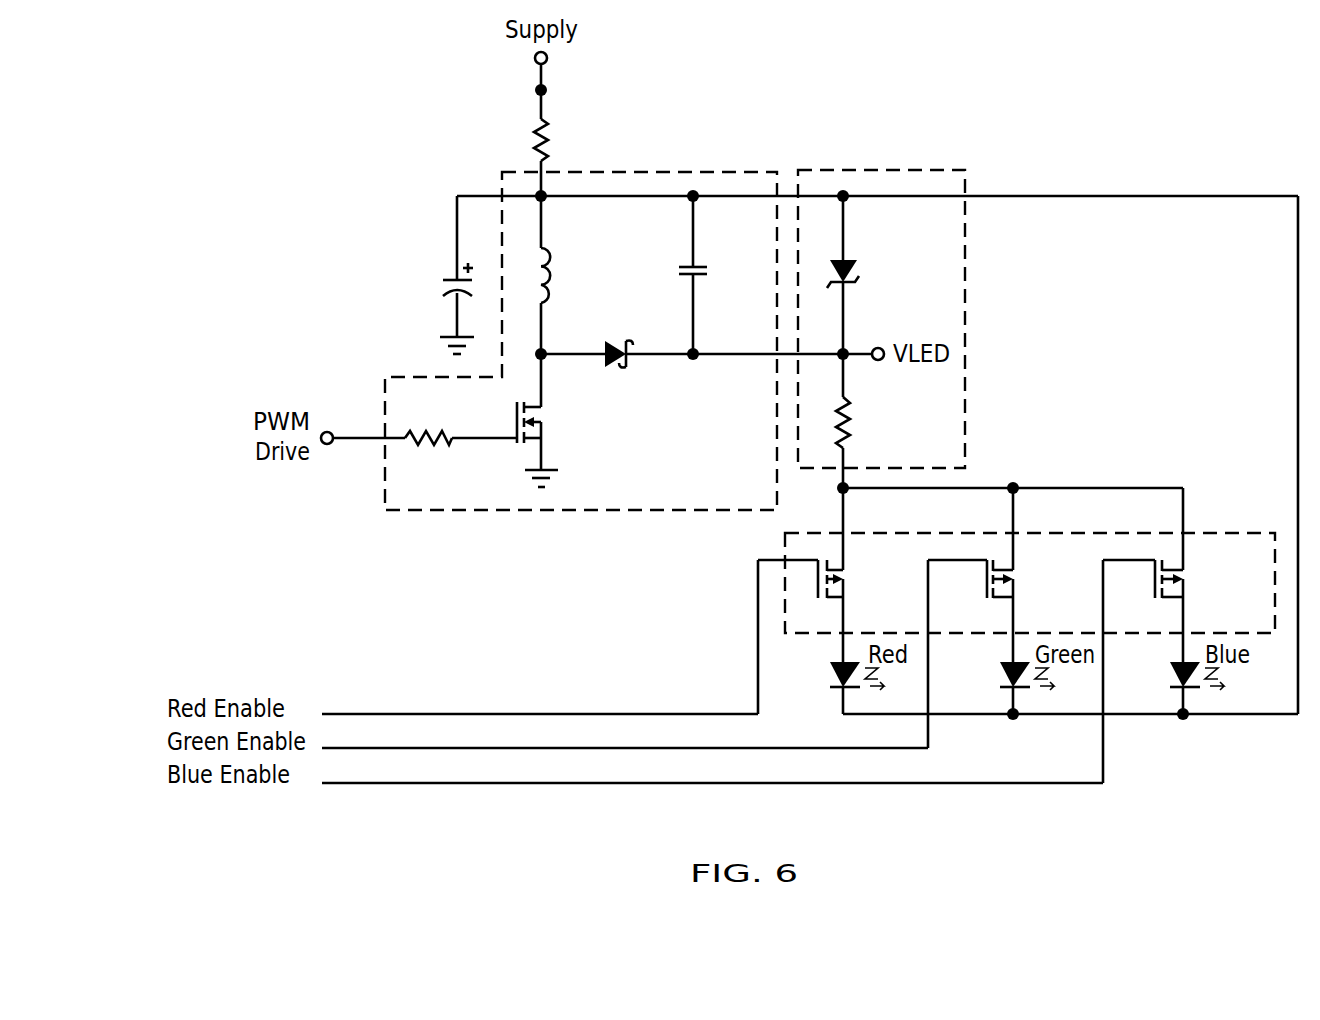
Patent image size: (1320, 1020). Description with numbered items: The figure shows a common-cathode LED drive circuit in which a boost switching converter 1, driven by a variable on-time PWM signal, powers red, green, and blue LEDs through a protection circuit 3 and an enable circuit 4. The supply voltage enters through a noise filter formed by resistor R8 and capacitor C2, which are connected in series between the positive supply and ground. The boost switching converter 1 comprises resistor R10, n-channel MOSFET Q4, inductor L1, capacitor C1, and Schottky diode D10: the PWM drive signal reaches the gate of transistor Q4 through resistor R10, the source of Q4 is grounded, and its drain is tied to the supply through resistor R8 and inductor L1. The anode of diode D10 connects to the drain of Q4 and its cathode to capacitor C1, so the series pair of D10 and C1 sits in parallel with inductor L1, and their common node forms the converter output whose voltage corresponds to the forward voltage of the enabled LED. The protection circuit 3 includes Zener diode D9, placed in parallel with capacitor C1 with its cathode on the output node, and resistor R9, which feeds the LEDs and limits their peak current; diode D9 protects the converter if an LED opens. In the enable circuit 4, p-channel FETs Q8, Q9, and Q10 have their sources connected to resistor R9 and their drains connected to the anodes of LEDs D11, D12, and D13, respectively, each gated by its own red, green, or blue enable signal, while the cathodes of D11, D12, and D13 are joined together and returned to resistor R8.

The switching converter 1 is at (662, 170).
The protection circuit 3 is at (883, 169).
The enable circuit 4 is at (1205, 532).
The resistor R8 is at (548, 145).
The capacitor C2 is at (445, 280).
The inductor L1 is at (552, 260).
The capacitor C1 is at (705, 268).
The Schottky diode D10 is at (618, 364).
The n-channel MOSFET Q4 is at (543, 427).
The resistor R10 is at (428, 445).
The Zener diode D9 is at (857, 272).
The resistor R9 is at (850, 428).
The p-channel FET Q8 is at (845, 583).
The p-channel FET Q9 is at (1015, 583).
The p-channel FET Q10 is at (1185, 583).
The red LED D11 is at (828, 676).
The green LED D12 is at (998, 676).
The blue LED D13 is at (1168, 676).